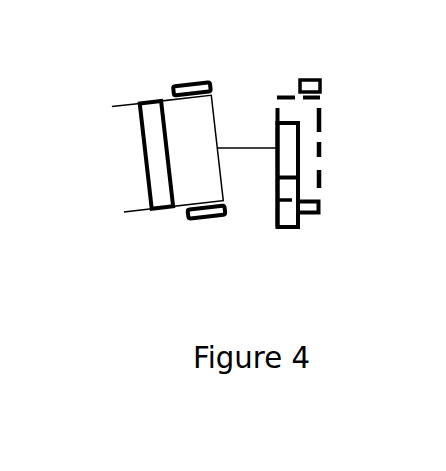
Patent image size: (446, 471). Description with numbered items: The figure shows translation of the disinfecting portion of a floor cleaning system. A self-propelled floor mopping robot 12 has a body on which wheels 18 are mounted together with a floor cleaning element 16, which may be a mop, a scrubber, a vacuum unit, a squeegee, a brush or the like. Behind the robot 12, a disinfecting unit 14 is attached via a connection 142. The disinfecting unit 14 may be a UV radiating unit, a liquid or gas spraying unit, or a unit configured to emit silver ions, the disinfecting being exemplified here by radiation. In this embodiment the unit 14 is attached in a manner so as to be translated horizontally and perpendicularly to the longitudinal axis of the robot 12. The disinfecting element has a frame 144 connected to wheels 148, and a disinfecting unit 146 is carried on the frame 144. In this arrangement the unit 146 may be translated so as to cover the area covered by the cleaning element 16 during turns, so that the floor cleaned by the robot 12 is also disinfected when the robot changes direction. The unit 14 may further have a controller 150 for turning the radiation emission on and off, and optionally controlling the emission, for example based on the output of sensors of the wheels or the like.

The self-propelled floor mopping robot 12 is at (156, 154).
The disinfecting unit 14 is at (312, 179).
The floor cleaning element 16 is at (137, 100).
The wheels 18 is at (203, 235).
The connection 142 is at (240, 124).
The frame 144 is at (330, 142).
The disinfecting unit 146 is at (285, 242).
The wheels 148 is at (331, 221).
The controller 150 is at (274, 190).